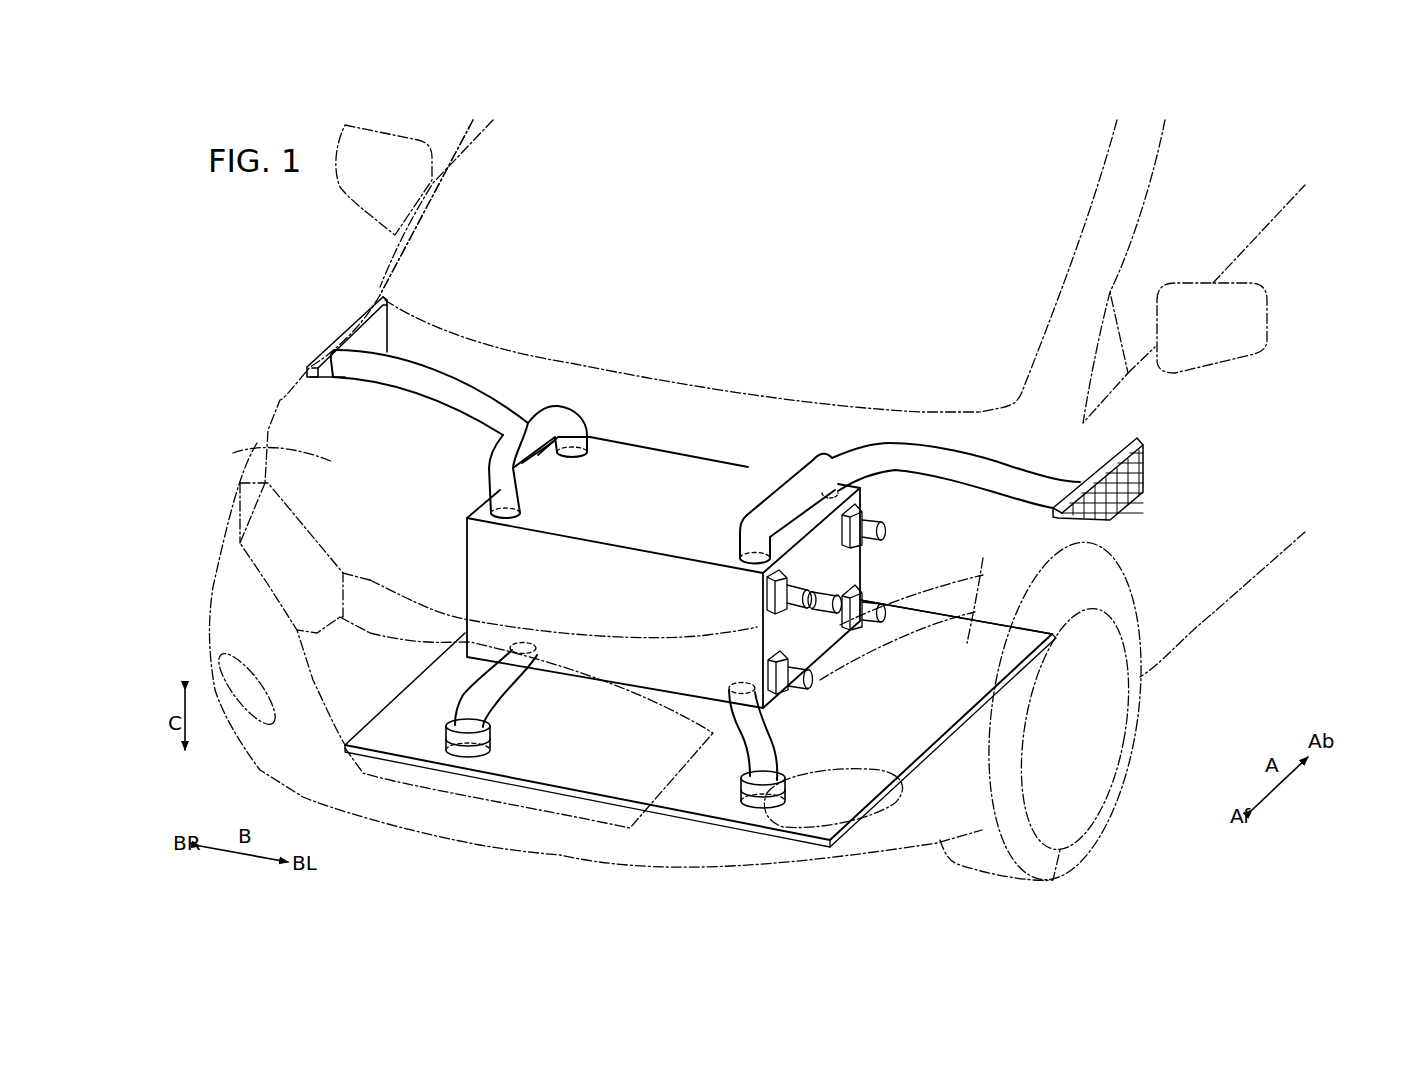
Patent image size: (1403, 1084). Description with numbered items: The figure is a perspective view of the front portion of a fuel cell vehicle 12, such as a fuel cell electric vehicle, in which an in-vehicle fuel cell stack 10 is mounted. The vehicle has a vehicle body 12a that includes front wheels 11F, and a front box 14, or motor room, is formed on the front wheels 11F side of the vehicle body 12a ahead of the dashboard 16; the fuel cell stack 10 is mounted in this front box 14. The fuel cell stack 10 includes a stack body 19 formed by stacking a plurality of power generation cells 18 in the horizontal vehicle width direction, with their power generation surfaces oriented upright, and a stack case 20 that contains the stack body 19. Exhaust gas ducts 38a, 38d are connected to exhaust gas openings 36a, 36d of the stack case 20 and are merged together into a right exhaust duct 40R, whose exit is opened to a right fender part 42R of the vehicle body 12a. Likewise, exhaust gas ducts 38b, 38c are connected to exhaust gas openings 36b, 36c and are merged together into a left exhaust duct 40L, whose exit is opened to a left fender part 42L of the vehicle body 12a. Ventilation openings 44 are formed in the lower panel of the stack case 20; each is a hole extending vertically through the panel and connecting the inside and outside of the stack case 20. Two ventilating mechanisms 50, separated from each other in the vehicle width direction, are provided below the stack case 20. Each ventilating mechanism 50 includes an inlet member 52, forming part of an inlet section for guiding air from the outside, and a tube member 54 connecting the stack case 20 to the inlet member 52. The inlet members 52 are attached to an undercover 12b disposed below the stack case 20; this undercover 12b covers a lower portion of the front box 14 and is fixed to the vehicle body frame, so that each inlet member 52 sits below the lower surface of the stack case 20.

The in-vehicle fuel cell stack 10 is at (695, 397).
The front wheels 11F is at (1105, 822).
The fuel cell vehicle 12 is at (268, 231).
The vehicle body 12a is at (292, 381).
The undercover 12b is at (993, 638).
The front box 14 is at (233, 453).
The dashboard 16 is at (571, 380).
The power generation cells 18 is at (700, 723).
The stack body 19 is at (600, 665).
The stack case 20 is at (710, 458).
The exhaust gas opening 36a is at (524, 509).
The exhaust gas opening 36b is at (830, 493).
The exhaust gas opening 36c is at (745, 551).
The exhaust gas opening 36d is at (585, 461).
The exhaust gas duct 38a is at (505, 497).
The exhaust gas duct 38b is at (813, 461).
The exhaust gas duct 38c is at (755, 535).
The exhaust gas duct 38d is at (578, 425).
The right exhaust duct 40R is at (371, 367).
The left exhaust duct 40L is at (1005, 468).
The right fender part 42R is at (290, 397).
The left fender part 42L is at (1127, 525).
The ventilation openings 44 is at (524, 645).
The ventilating mechanism 50 is at (455, 683).
The inlet member 52 is at (448, 736).
The tube member 54 is at (498, 683).